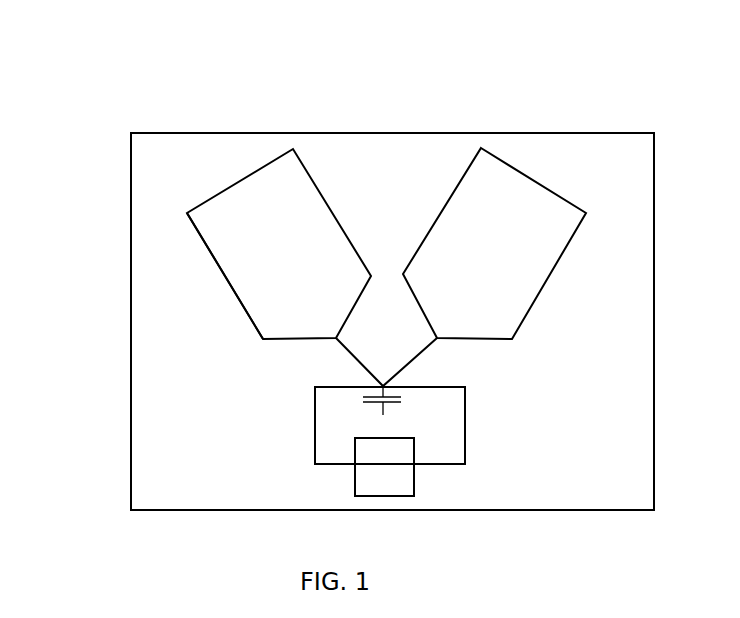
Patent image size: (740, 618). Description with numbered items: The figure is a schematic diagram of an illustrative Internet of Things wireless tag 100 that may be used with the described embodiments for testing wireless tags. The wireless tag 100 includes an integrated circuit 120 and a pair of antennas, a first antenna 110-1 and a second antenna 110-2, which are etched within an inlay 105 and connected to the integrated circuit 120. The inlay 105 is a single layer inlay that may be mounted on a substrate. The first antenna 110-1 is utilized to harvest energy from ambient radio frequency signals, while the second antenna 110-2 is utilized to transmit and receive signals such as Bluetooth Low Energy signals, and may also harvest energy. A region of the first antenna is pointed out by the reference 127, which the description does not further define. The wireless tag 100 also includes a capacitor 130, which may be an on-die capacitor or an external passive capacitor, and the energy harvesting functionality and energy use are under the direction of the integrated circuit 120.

The wireless tag 100 is at (155, 52).
The inlay 105 is at (143, 182).
The first antenna 110-1 is at (317, 205).
The second antenna 110-2 is at (522, 183).
The edge of antenna element 127 is at (258, 280).
The capacitor 130 is at (363, 400).
The integrated circuit 120 is at (353, 470).